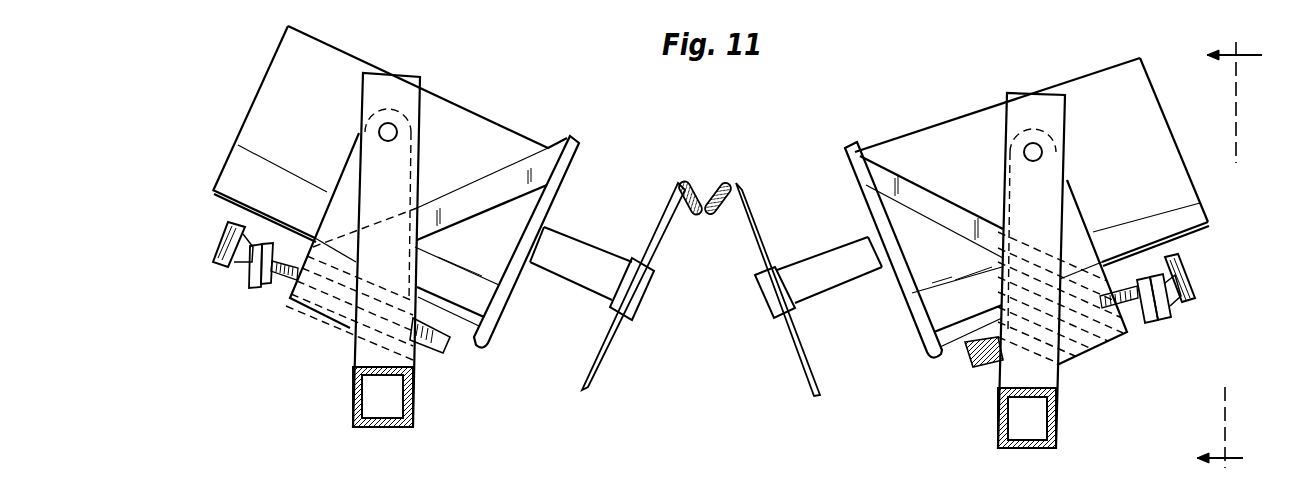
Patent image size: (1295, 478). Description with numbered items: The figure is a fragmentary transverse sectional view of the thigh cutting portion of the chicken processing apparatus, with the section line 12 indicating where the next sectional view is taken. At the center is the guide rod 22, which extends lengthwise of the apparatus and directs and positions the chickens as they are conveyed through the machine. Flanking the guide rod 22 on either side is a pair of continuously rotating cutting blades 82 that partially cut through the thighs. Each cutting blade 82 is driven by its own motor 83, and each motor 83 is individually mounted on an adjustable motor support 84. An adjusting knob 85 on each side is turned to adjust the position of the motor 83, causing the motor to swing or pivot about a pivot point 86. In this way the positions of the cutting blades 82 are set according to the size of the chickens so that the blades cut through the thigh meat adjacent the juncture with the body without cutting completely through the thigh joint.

The guide rod 22 is at (690, 183).
The cutting blade 82 is at (597, 373).
The motor 83 is at (470, 137).
The adjustable motor support 84 is at (481, 345).
The adjusting knob 85 is at (215, 265).
The pivot point 86 is at (379, 129).
The section line FIG. 12 is at (1246, 259).